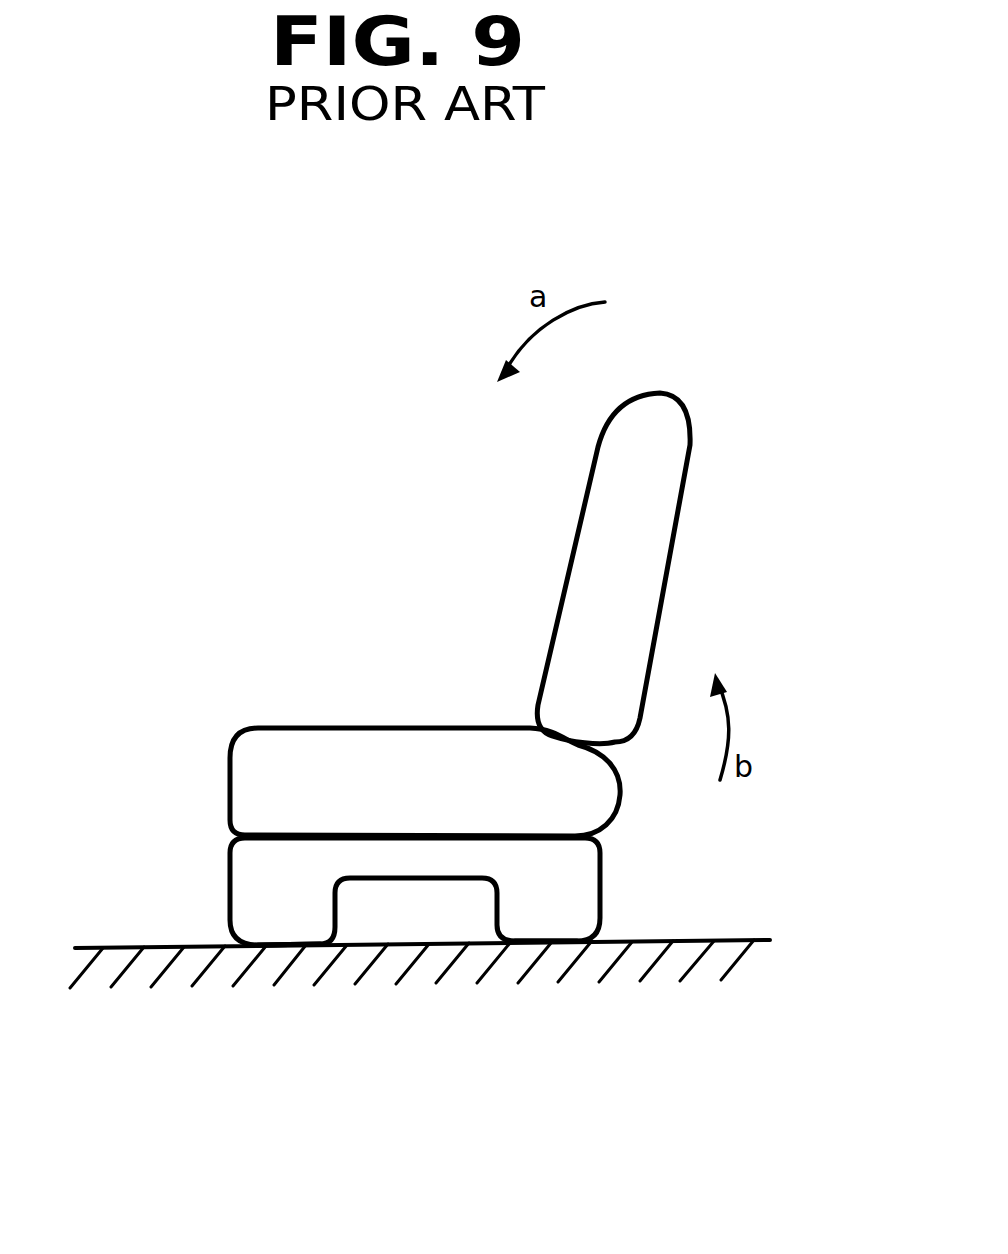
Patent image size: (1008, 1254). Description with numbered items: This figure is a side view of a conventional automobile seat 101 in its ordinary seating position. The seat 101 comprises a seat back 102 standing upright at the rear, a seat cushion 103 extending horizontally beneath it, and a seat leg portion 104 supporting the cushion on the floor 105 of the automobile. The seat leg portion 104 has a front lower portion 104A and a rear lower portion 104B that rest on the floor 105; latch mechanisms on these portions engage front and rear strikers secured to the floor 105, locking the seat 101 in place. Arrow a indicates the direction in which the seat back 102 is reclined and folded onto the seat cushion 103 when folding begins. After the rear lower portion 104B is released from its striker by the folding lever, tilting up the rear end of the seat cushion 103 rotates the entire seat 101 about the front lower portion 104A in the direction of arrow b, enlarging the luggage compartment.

The seat 101 is at (738, 460).
The seat back 102 is at (655, 549).
The seat cushion 103 is at (245, 757).
The seat leg portion 104 is at (243, 880).
The front lower portion 104A is at (293, 923).
The rear lower portion 104B is at (547, 917).
The floor 105 is at (683, 940).